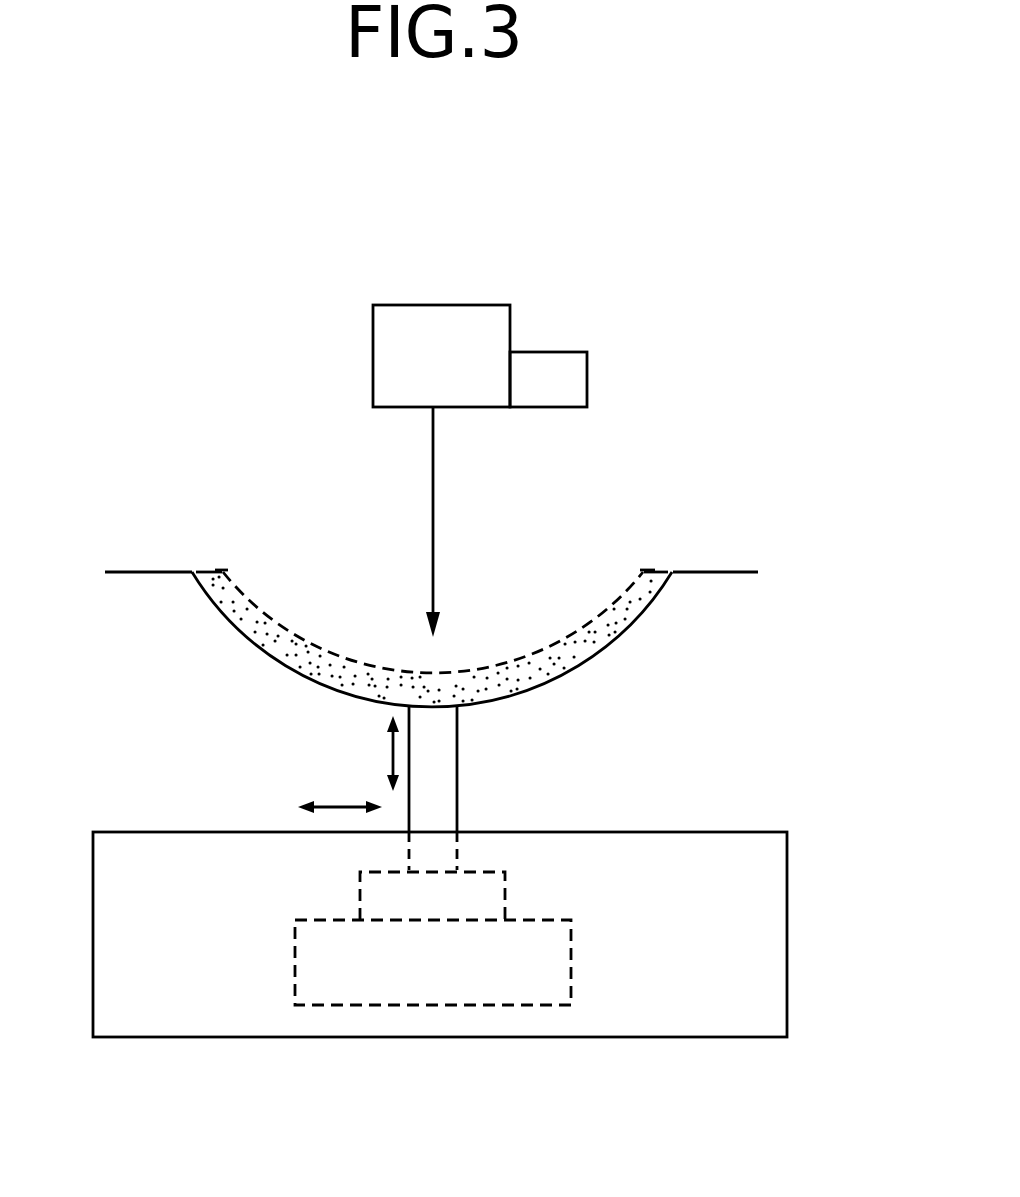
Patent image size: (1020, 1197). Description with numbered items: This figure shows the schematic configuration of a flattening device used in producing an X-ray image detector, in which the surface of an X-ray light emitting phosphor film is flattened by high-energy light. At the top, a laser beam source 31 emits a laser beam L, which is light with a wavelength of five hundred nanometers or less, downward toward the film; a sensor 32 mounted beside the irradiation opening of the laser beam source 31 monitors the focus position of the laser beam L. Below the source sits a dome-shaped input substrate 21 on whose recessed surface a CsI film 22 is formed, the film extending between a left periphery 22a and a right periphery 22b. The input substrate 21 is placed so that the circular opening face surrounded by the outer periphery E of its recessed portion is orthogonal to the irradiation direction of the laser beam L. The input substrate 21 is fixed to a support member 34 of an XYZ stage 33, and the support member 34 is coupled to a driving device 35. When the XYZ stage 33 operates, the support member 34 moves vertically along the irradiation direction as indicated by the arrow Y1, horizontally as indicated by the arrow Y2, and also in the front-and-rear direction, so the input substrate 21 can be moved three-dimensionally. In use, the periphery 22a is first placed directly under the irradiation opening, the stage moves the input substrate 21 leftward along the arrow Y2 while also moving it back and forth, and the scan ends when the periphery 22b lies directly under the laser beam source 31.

The input substrate 21 is at (630, 645).
The CsI film 22 is at (307, 658).
The periphery of the CsI film 22a is at (205, 570).
The periphery of the CsI film 22b is at (657, 570).
The laser beam source 31 is at (510, 316).
The sensor 32 is at (587, 378).
The XYZ stage 33 is at (787, 880).
The support member 34 is at (457, 770).
The driving device 35 is at (500, 993).
The laser beam L is at (433, 462).
The outer periphery E is at (158, 572).
The arrow Y1 is at (383, 757).
The arrow Y2 is at (342, 806).